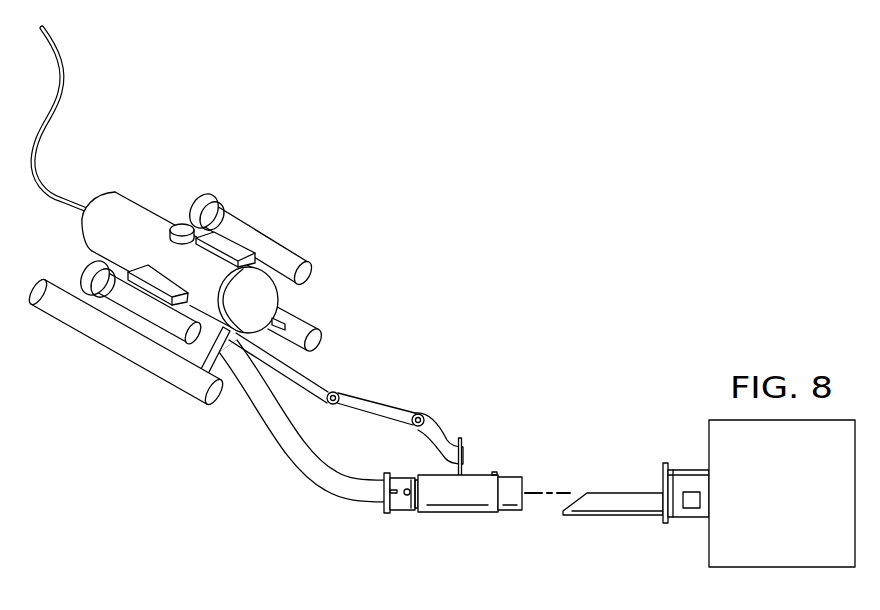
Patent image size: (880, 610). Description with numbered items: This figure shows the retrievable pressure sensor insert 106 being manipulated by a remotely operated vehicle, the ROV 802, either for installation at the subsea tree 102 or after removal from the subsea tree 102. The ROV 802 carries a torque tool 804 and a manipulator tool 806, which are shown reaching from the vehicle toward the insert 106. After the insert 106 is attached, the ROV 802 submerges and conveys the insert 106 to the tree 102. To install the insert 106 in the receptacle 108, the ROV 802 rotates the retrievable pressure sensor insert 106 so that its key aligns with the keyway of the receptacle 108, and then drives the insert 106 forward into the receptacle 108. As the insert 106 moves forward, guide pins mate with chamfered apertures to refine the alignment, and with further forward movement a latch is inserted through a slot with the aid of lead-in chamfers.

The ROV 802 is at (132, 367).
The torque tool 804 is at (307, 485).
The manipulator tool 806 is at (442, 422).
The retrievable pressure sensor insert 106 is at (458, 513).
The receptacle 108 is at (613, 517).
The subsea tree 102 is at (803, 525).